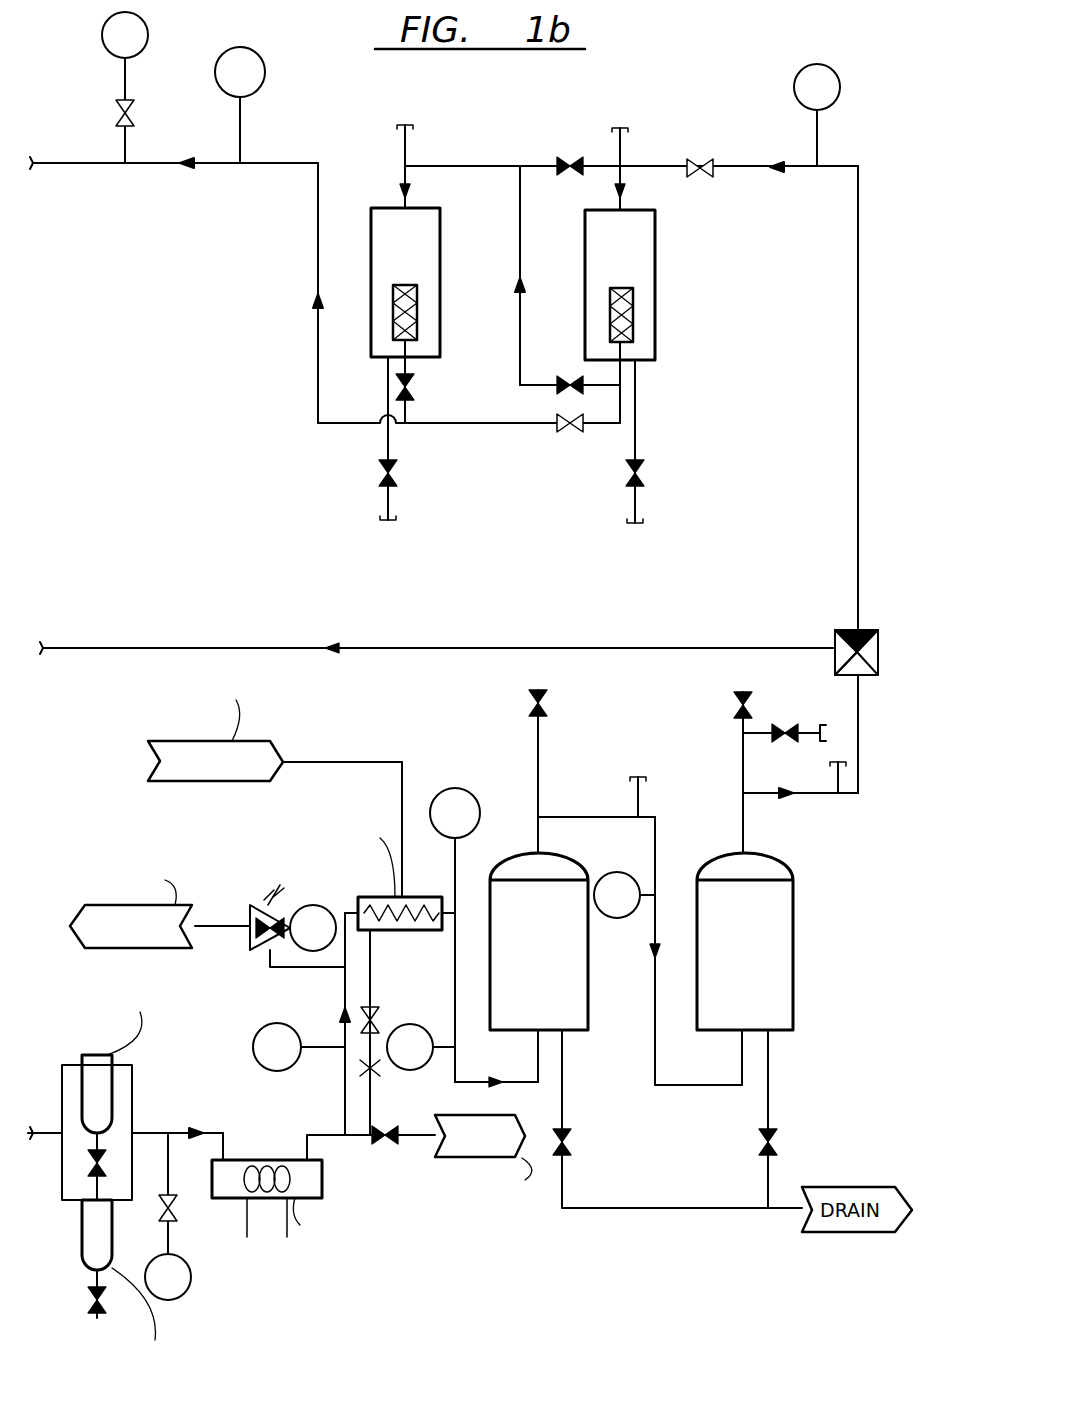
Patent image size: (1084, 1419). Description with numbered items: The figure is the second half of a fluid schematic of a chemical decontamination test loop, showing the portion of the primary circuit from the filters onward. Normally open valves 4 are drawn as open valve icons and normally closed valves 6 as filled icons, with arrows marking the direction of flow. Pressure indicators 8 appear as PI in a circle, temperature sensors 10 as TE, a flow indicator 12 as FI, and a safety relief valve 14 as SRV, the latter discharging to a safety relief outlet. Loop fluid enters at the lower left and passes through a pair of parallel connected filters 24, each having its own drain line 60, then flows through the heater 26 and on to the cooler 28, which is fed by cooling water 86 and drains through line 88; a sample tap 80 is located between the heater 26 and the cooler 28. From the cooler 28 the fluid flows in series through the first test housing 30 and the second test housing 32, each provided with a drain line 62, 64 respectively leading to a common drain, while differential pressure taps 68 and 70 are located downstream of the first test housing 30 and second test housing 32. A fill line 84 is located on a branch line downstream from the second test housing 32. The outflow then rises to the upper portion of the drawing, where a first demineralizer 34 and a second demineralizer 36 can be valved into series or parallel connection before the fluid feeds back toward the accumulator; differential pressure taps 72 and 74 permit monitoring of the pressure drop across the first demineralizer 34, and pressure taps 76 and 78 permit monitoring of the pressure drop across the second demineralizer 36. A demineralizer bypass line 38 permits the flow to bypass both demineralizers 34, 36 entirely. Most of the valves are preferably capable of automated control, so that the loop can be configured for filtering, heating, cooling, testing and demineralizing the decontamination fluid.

The normally open valve 4 is at (130, 113).
The normally closed valve 6 is at (565, 158).
The pressure indicator 8 is at (147, 28).
The temperature sensor 10 is at (265, 70).
The flow indicator 12 is at (460, 790).
The safety relief valve 14 is at (255, 948).
The filter 24 is at (112, 1090).
The heater 26 is at (282, 1160).
The cooler 28 is at (378, 897).
The first test housing 30 is at (588, 1000).
The second test housing 32 is at (793, 975).
The first demineralizer 34 is at (655, 318).
The second demineralizer 36 is at (440, 250).
The demineralizer bypass line 38 is at (470, 648).
The drain line 60 is at (112, 1133).
The drain line 62 is at (565, 1112).
The drain line 64 is at (770, 1112).
The differential pressure tap 68 is at (648, 776).
The differential pressure tap 70 is at (826, 768).
The differential pressure tap 72 is at (620, 130).
The differential pressure tap 74 is at (636, 526).
The pressure tap 76 is at (405, 128).
The pressure tap 78 is at (392, 522).
The sample tap 80 is at (468, 1115).
The fill line 84 is at (820, 724).
The cooling water 86 is at (270, 741).
The drain line 88 is at (360, 1072).